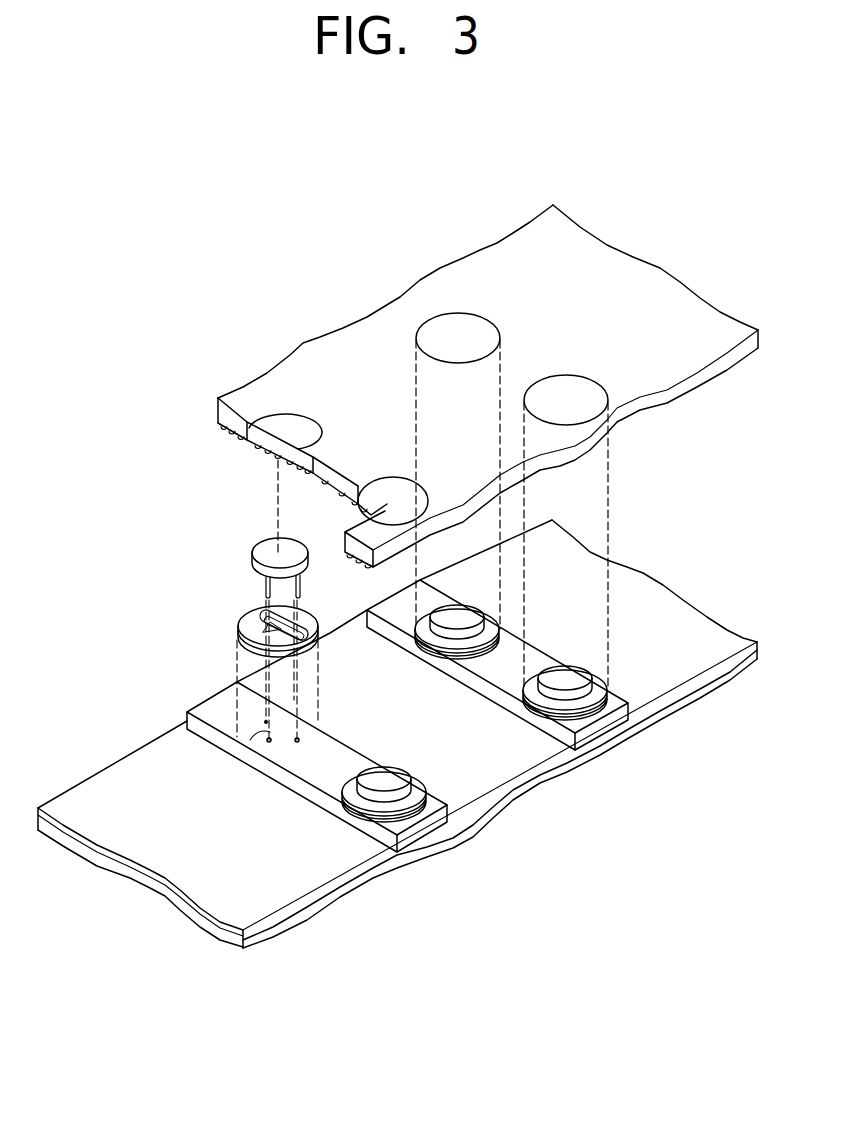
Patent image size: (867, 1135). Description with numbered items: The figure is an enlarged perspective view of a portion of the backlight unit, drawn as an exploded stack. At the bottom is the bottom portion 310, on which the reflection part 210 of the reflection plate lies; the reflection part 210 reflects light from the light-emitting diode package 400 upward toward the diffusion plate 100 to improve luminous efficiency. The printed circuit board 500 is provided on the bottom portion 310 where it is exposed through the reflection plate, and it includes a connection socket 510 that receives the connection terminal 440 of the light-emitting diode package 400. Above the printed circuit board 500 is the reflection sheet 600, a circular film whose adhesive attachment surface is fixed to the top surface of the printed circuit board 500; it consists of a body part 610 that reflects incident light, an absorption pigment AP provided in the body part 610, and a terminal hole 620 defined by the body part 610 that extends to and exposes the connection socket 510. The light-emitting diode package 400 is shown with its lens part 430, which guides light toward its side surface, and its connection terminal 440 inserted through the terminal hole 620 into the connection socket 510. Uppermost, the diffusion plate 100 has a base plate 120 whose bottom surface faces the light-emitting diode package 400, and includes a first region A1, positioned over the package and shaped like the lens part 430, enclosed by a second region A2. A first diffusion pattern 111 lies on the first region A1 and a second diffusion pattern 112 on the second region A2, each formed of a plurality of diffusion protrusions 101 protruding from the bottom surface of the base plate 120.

The diffusion plate 100 is at (447, 447).
The first region A1 is at (437, 332).
The second region A2 is at (437, 297).
The base plate 120 is at (218, 410).
The first diffusion pattern 111 is at (263, 462).
The diffusion protrusions 101 is at (332, 486).
The second diffusion pattern 112 is at (357, 568).
The light-emitting diode package 400 is at (204, 533).
The lens part 430 is at (250, 560).
The connection terminal 440 is at (266, 590).
The reflection sheet 600 is at (181, 671).
The terminal hole 620 is at (240, 620).
The body part 610 is at (238, 643).
The absorption pigment AP is at (262, 630).
The connection socket 510 is at (268, 738).
The reflection part 210 is at (690, 682).
The bottom portion 310 is at (283, 920).
The printed circuit board 500 is at (597, 730).